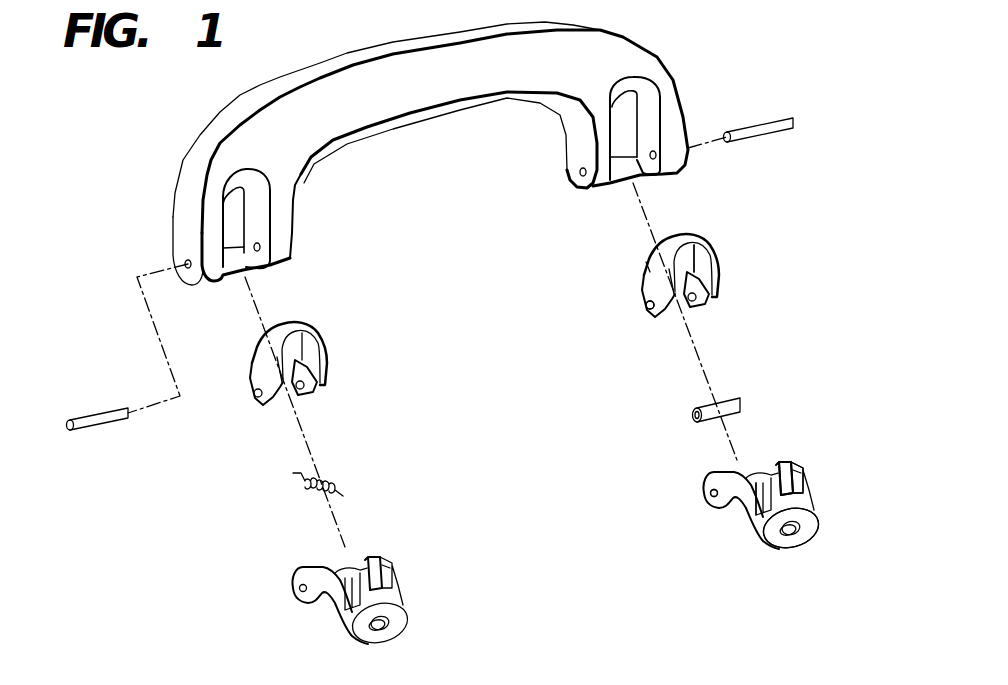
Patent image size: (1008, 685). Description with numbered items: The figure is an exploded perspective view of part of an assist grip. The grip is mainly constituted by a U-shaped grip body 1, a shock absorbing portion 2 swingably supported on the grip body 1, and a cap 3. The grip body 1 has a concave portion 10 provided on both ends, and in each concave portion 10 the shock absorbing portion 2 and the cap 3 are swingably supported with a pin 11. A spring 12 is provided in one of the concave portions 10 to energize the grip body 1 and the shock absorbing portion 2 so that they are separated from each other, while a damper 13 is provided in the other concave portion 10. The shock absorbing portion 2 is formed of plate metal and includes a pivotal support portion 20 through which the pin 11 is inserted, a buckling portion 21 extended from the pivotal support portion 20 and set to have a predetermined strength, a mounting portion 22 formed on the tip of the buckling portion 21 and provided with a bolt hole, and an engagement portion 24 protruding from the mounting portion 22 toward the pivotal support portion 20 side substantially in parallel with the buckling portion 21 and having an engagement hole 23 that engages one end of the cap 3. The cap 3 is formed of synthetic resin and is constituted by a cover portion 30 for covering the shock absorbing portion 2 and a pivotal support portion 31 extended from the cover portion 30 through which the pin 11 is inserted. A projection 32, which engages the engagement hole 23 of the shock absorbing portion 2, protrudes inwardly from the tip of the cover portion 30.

The grip body 1 is at (437, 142).
The concave portion 10 is at (240, 190).
The pin 11 is at (763, 128).
The spring 12 is at (297, 495).
The damper 13 is at (707, 405).
The shock absorbing portion 2 is at (397, 597).
The pivotal support portion 20 is at (700, 488).
The buckling portion 21 is at (750, 515).
The mounting portion 22 is at (777, 535).
The engagement hole 23 is at (792, 460).
The engagement portion 24 is at (793, 478).
The cap 3 is at (310, 355).
The cover portion 30 is at (653, 273).
The pivotal support portion 31 is at (643, 310).
The projection 32 is at (693, 248).